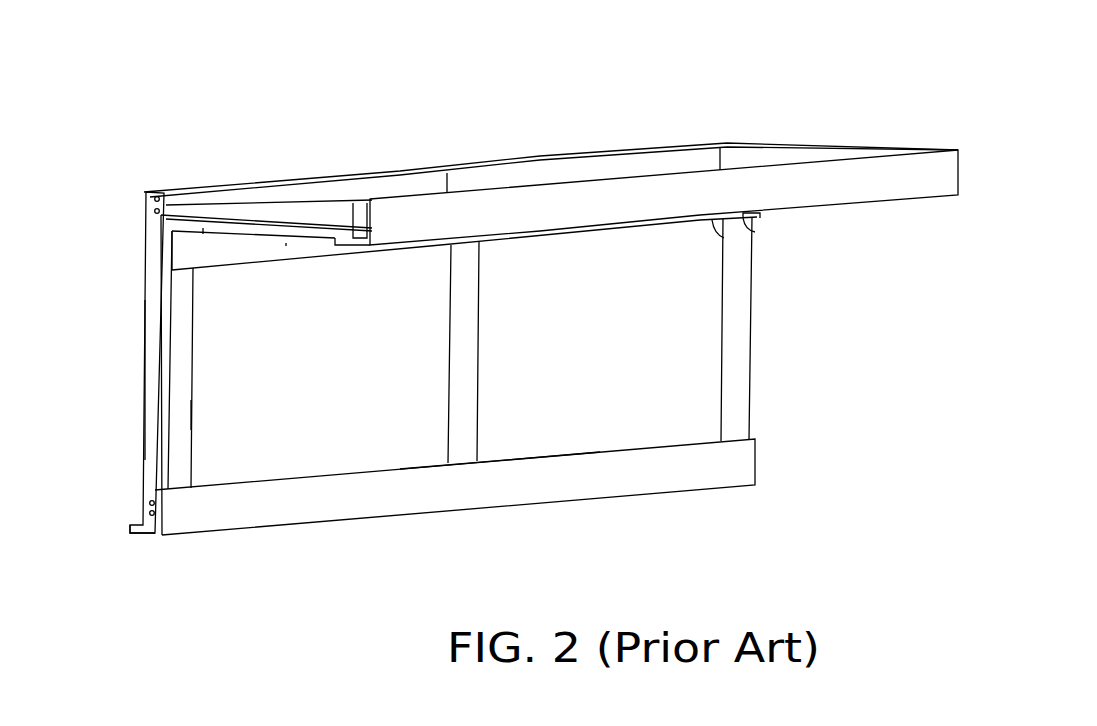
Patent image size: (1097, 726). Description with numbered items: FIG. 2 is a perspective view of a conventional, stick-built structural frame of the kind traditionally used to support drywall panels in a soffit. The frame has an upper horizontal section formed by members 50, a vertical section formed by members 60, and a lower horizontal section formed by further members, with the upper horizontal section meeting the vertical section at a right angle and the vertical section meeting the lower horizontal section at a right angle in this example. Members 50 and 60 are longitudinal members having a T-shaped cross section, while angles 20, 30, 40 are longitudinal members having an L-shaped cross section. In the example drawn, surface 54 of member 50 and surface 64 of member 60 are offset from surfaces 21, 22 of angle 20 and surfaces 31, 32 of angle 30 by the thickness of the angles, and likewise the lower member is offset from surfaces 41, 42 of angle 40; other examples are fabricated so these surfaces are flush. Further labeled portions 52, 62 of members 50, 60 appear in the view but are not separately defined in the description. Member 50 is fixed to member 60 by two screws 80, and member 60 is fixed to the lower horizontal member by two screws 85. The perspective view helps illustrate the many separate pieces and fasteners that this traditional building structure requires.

The angle 20 is at (592, 478).
The surface 21 is at (147, 533).
The surface 22 is at (511, 480).
The angle 30 is at (744, 219).
The surface 31 is at (723, 224).
The surface 32 is at (187, 233).
The angle 40 is at (585, 205).
The surface 41 is at (354, 203).
The surface 42 is at (699, 190).
The member 50 is at (297, 218).
The cross member 52 is at (222, 207).
The surface 54 is at (258, 225).
The member 60 is at (173, 365).
The side flange of wall bracket 62 is at (148, 378).
The surface 64 is at (173, 411).
The screws 80 is at (143, 204).
The screws 85 is at (150, 513).